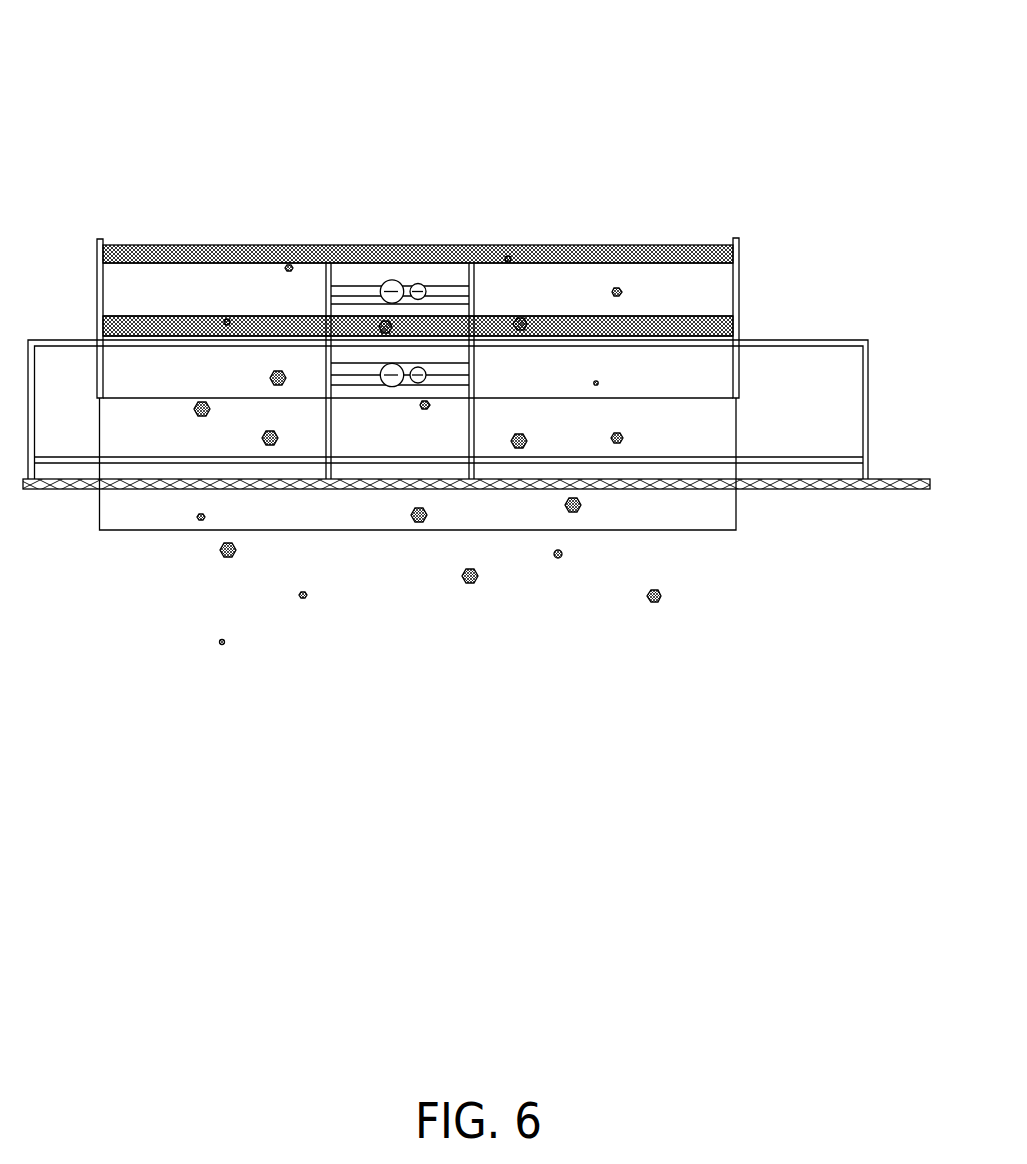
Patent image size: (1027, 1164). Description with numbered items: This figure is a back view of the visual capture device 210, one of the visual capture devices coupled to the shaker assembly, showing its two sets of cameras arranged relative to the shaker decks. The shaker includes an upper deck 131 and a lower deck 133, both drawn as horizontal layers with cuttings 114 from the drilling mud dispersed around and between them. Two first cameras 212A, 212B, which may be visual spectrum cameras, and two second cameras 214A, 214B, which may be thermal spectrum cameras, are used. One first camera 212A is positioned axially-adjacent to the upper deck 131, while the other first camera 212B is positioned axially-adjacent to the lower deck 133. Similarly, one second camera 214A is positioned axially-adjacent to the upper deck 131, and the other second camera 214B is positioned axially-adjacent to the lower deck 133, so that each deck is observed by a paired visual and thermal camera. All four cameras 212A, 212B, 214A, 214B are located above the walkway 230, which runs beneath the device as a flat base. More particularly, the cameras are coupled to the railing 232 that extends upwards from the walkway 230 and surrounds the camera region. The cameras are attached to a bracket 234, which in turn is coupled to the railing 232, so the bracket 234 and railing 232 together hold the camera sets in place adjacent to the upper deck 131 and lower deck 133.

The visual capture device 210 is at (112, 77).
The upper deck 131 is at (697, 248).
The lower deck 133 is at (720, 326).
The first camera 212A is at (380, 292).
The first camera 212B is at (380, 375).
The second camera 214A is at (427, 292).
The second camera 214B is at (427, 375).
The railing 232 is at (870, 392).
The walkway 230 is at (906, 479).
The bracket 234 is at (359, 376).
The cuttings 114 is at (559, 559).